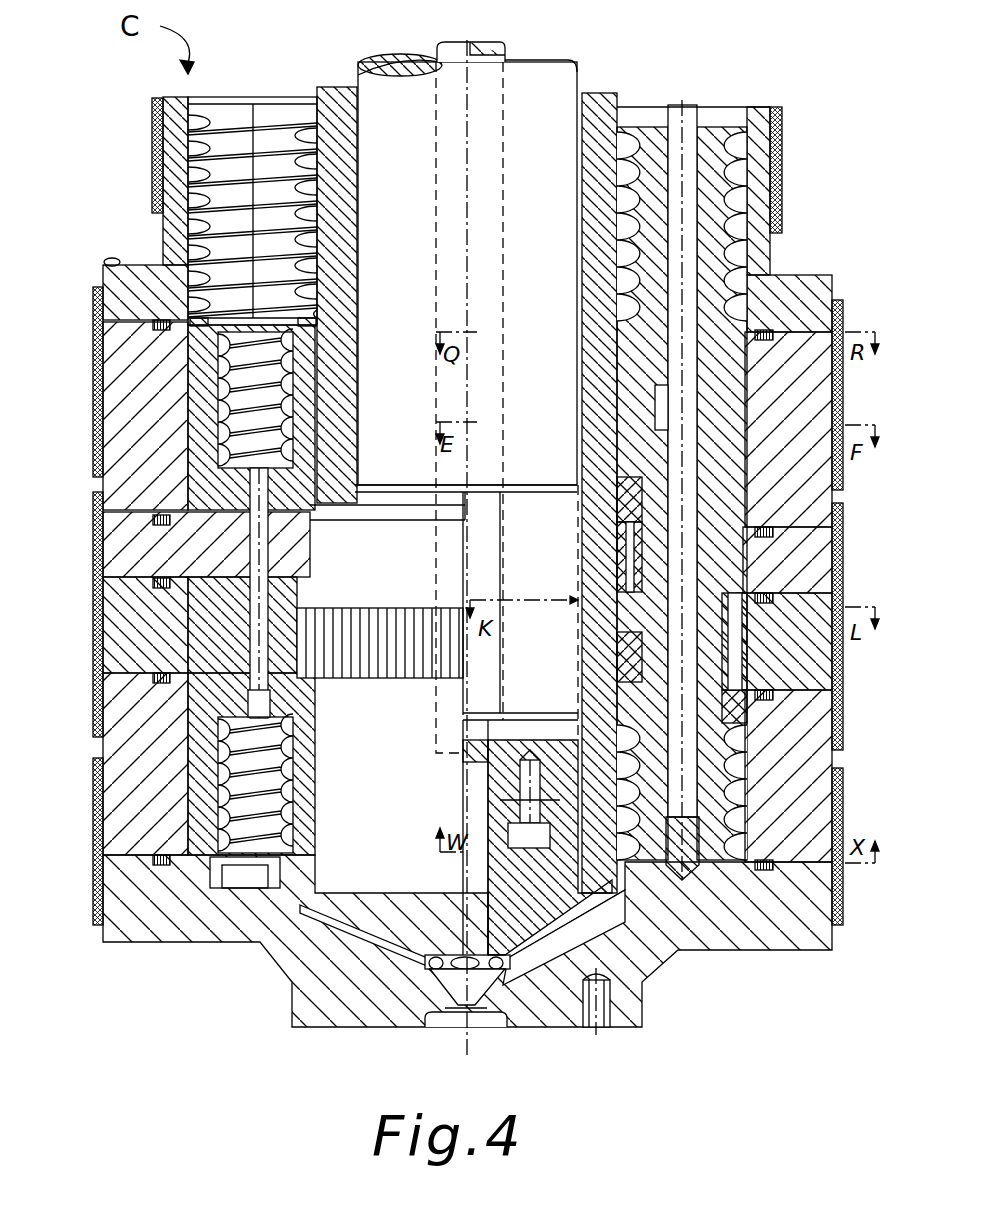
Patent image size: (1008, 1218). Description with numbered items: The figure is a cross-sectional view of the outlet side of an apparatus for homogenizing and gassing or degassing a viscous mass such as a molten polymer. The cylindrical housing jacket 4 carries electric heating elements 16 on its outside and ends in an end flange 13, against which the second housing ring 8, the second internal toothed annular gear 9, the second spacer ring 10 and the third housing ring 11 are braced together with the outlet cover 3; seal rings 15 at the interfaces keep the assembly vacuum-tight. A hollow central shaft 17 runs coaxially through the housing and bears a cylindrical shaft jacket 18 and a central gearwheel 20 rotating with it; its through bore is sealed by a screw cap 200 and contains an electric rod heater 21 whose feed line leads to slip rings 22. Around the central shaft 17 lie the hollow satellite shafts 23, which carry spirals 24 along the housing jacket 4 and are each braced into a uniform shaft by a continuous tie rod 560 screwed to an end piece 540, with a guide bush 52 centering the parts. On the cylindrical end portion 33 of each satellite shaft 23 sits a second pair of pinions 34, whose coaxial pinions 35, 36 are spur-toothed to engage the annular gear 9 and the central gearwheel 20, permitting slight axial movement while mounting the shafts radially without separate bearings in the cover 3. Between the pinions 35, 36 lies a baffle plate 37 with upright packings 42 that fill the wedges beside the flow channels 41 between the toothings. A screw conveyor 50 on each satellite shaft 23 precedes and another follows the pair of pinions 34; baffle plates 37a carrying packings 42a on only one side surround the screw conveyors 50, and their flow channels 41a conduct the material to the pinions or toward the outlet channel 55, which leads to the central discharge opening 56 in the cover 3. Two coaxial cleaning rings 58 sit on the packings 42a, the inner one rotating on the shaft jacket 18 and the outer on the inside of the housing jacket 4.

The cover 3 is at (740, 940).
The housing jacket 4 is at (757, 186).
The second housing ring 8 is at (800, 420).
The second internal toothed annular gear 9 is at (787, 566).
The second spacer ring 10 is at (122, 640).
The third housing ring 11 is at (787, 792).
The end flange 13 is at (150, 275).
The seal ring 15 is at (160, 870).
The electric heating element 16 is at (110, 430).
The central shaft 17 is at (536, 95).
The shaft jacket 18 is at (602, 118).
The central gearwheel 20 is at (382, 659).
The electric rod heater 21 is at (482, 62).
The slip rings 22 is at (738, 332).
The satellite shaft 23 is at (232, 115).
The spiral 24 is at (737, 146).
The cylindrical end portion 33 is at (612, 720).
The second pair of pinions 34 is at (522, 603).
The pinion 35 is at (645, 556).
The pinion 36 is at (636, 656).
The baffle plate 37 is at (800, 642).
The baffle plate 37a is at (622, 500).
The flow channel 41 is at (262, 598).
The flow channel 41a is at (265, 690).
The packing 42 is at (287, 553).
The packing 42a is at (300, 440).
The screw conveyor 50 is at (265, 382).
The guide bush 52 is at (660, 395).
The outlet channel 55 is at (635, 880).
The central discharge opening 56 is at (470, 1010).
The cleaning ring 58 is at (105, 265).
The screw cap 200 is at (425, 920).
The end piece 540 is at (237, 878).
The tie rod 560 is at (690, 130).